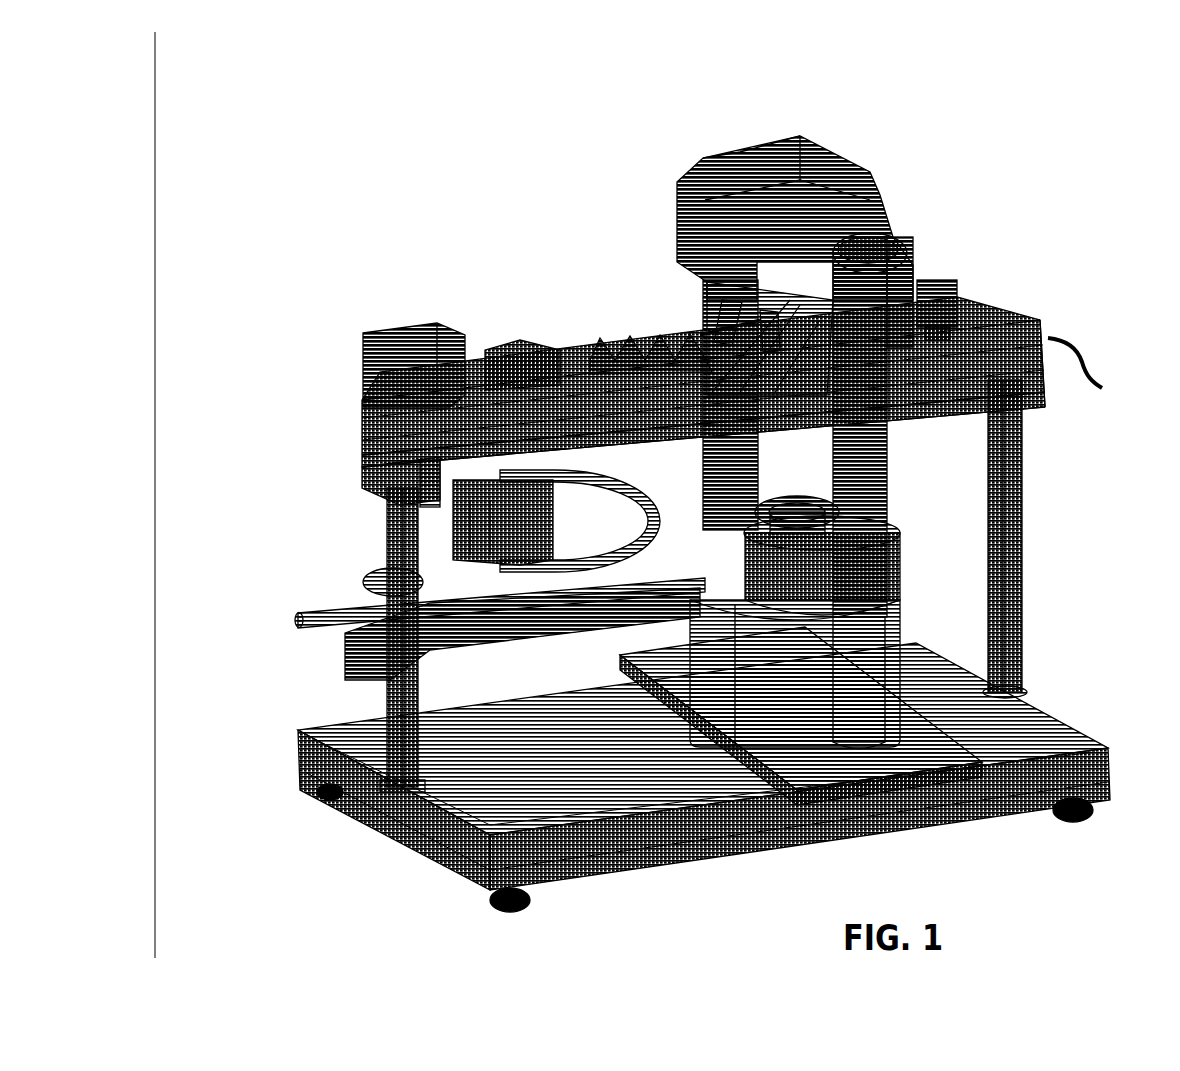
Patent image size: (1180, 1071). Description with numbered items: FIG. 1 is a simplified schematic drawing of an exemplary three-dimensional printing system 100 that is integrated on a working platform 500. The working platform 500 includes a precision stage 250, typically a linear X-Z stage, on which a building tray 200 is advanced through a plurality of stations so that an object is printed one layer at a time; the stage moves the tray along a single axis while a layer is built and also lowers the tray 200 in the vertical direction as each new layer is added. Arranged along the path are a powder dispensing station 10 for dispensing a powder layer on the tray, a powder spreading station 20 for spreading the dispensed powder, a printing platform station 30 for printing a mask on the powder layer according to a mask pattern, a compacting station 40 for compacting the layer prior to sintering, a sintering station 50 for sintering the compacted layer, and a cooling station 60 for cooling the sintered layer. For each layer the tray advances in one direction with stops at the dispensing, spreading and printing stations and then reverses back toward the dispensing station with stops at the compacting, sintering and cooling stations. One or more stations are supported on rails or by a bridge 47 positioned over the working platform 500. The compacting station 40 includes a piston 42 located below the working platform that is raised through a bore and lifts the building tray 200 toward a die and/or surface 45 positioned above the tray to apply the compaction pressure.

The 3D printing system 100 is at (1030, 112).
The powder dispensing station 10 is at (397, 327).
The powder spreading station 20 is at (520, 348).
The printing platform station 30 is at (940, 280).
The compacting station 40 is at (892, 130).
The piston 42 is at (887, 537).
The die and/or surface 45 is at (707, 280).
The bridge 47 is at (793, 136).
The sintering station 50 is at (667, 330).
The cooling station 60 is at (607, 352).
The building tray 200 is at (362, 428).
The precision stage 250 is at (390, 435).
The working platform 500 is at (1101, 368).